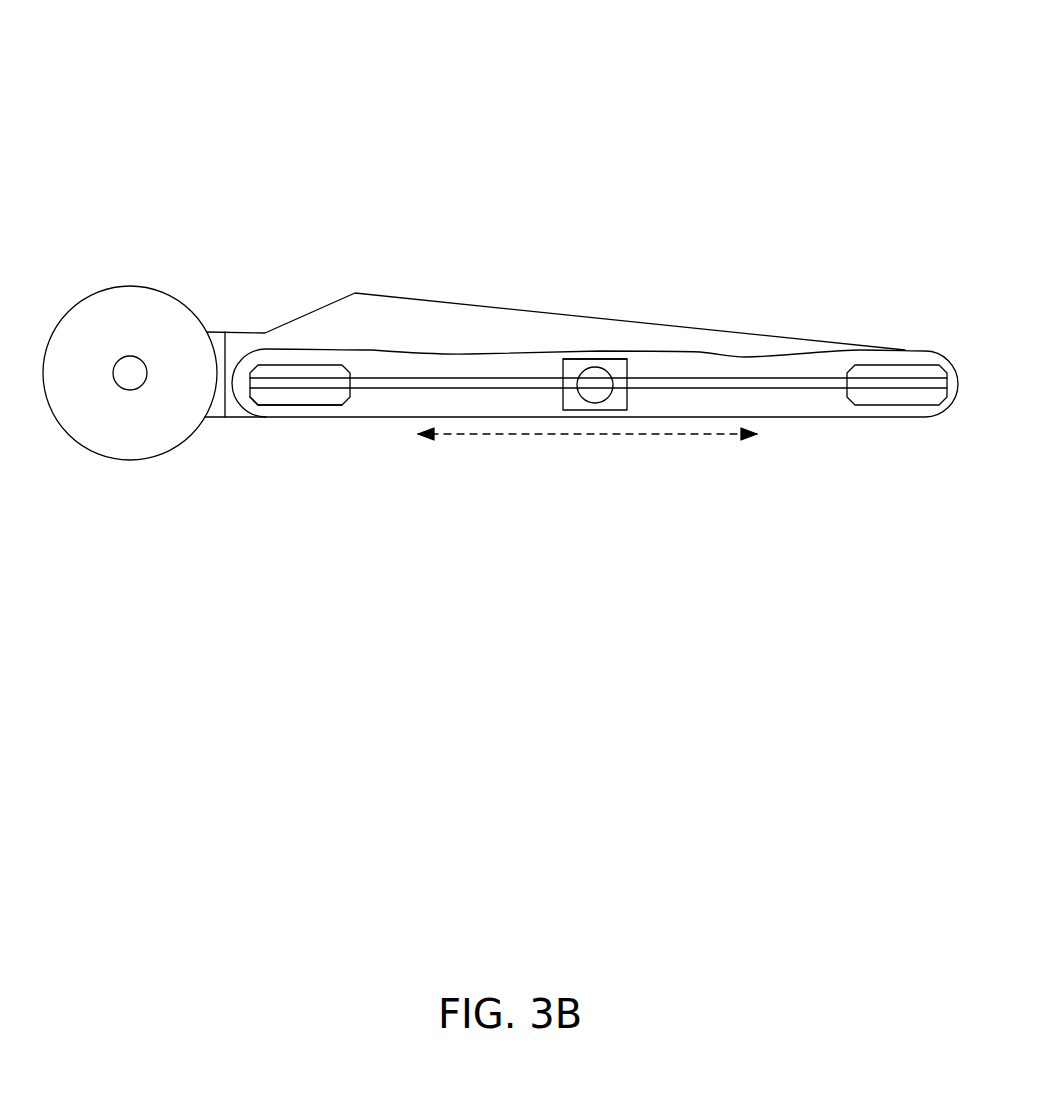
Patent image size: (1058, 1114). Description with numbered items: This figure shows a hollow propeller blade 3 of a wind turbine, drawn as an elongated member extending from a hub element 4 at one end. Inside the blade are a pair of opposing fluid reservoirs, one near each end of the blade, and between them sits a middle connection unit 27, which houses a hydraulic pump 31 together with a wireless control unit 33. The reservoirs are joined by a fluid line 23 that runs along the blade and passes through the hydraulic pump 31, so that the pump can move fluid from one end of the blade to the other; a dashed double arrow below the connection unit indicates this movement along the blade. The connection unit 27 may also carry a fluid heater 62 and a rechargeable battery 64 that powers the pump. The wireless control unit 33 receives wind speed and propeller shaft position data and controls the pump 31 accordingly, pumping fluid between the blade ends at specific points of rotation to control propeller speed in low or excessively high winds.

The hollow propeller blade 3 is at (563, 160).
The wheel 4 is at (110, 433).
The fluid line 23 is at (397, 390).
The middle connection unit 27 is at (581, 357).
The hydraulic pump 31 is at (570, 405).
The wireless control unit 33 is at (617, 405).
The fluid heater 62 is at (300, 404).
The rechargeable battery 64 is at (613, 358).